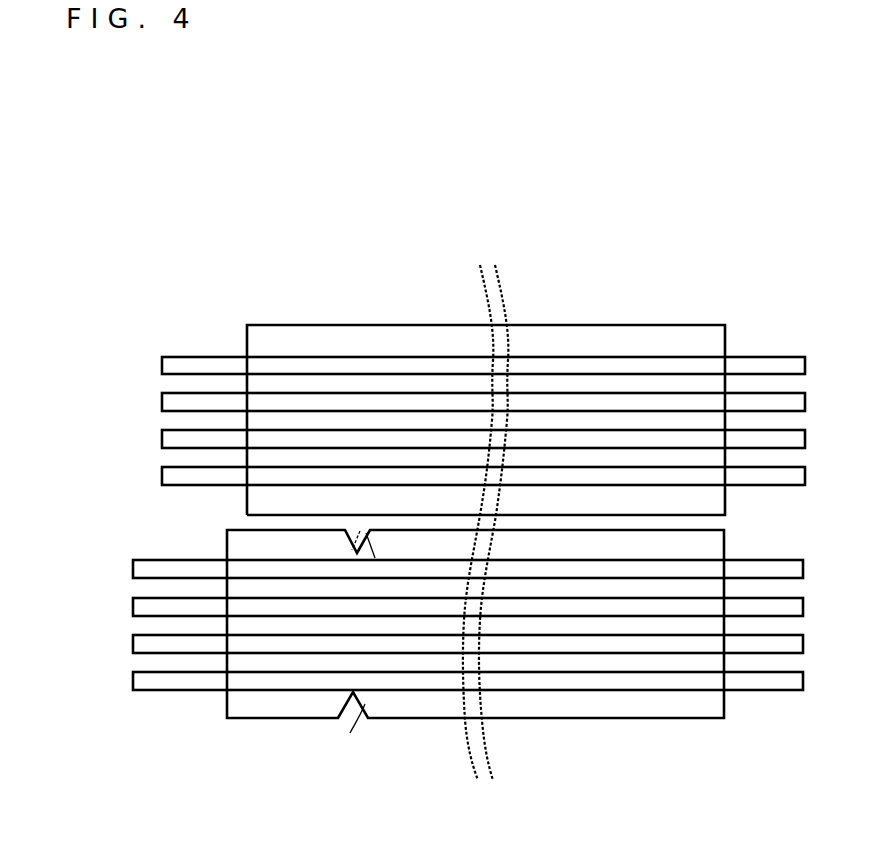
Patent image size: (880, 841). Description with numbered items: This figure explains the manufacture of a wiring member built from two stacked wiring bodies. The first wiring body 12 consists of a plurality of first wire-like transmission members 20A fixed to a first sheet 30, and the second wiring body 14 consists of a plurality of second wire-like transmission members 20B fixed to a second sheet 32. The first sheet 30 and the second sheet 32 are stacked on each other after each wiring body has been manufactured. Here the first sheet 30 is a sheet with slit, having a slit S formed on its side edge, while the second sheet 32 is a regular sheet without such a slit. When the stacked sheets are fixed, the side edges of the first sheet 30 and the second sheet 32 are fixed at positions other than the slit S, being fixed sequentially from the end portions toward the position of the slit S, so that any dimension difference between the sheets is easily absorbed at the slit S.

The second wiring body 14 is at (226, 208).
The second sheet 32 is at (302, 340).
The first sheet 30 is at (275, 705).
The second wire-like transmission member 20B is at (200, 398).
The first wire-like transmission member 20A is at (183, 648).
The slit S is at (374, 558).
The first wiring body 12 is at (237, 752).